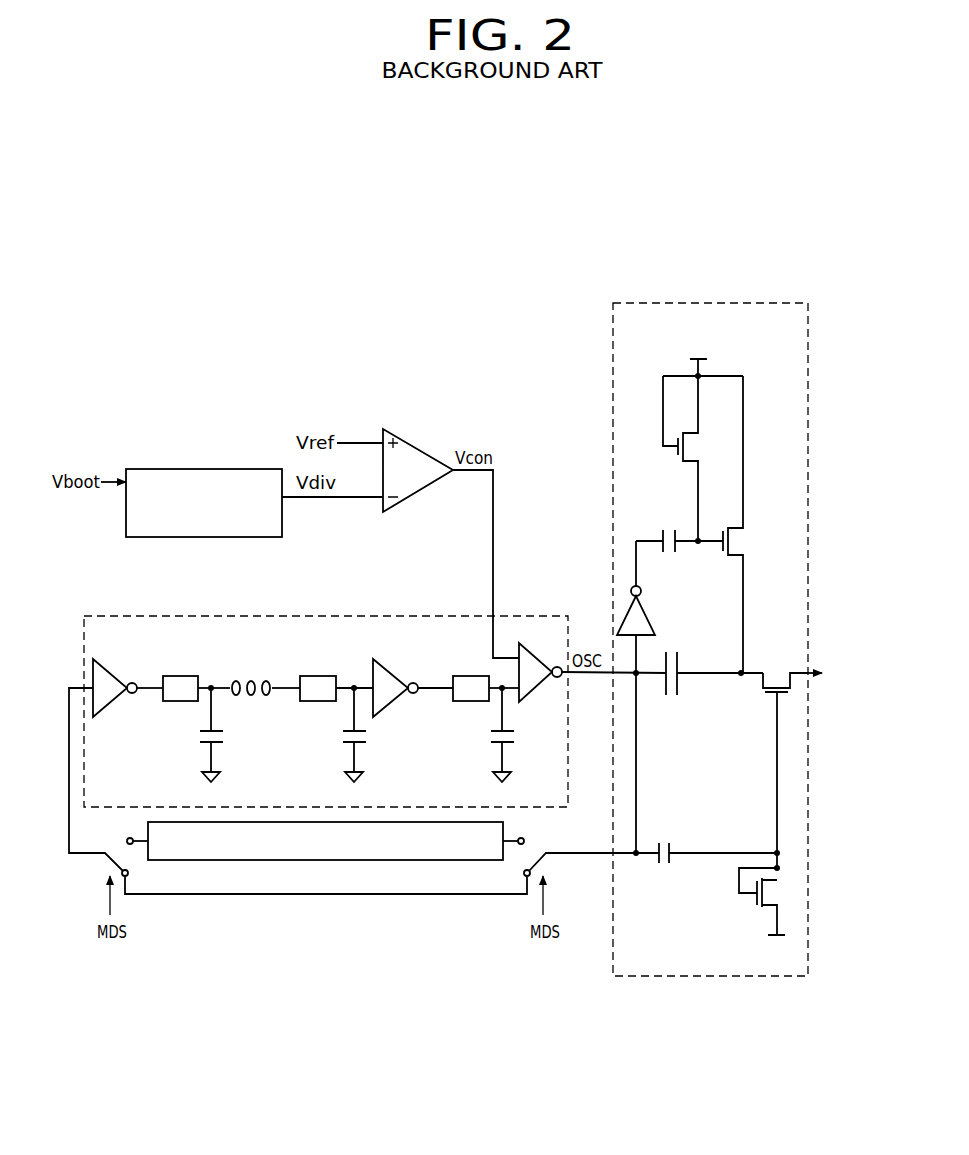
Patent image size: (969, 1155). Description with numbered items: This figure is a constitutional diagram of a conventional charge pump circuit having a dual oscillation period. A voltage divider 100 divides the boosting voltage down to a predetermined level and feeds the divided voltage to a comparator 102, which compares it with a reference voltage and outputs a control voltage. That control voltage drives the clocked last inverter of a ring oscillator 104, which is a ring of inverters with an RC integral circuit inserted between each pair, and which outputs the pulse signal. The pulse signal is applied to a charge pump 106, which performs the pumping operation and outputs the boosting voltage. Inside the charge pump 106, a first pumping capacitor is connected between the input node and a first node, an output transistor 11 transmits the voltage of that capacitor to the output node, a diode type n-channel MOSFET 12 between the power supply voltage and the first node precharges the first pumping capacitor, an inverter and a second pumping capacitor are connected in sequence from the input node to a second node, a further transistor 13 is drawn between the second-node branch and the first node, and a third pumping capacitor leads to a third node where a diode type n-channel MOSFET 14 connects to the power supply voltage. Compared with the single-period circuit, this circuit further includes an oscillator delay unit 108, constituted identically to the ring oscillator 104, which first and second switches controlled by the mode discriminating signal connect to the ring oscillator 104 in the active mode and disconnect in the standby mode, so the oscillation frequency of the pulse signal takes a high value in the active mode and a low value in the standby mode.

The voltage divider 100 is at (186, 469).
The comparator 102 is at (413, 442).
The ring oscillator 104 is at (513, 614).
The charge pump 106 is at (805, 372).
The oscillator delay unit 108 is at (505, 826).
The output transistor 11 is at (785, 758).
The diode type n-channel MOSFET 12 is at (703, 458).
The transistor 13 is at (746, 524).
The diode type n-channel MOSFET 14 is at (770, 901).